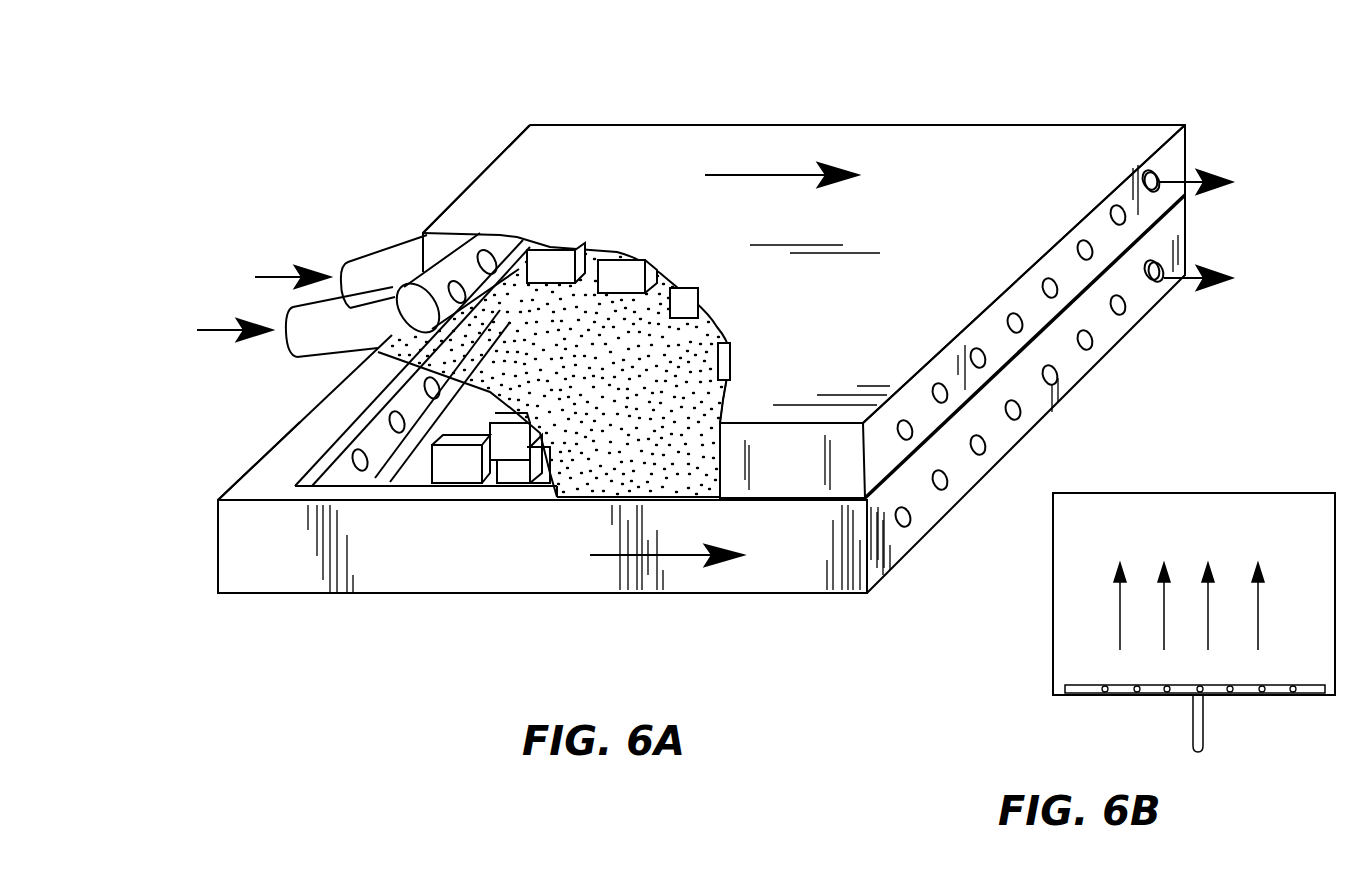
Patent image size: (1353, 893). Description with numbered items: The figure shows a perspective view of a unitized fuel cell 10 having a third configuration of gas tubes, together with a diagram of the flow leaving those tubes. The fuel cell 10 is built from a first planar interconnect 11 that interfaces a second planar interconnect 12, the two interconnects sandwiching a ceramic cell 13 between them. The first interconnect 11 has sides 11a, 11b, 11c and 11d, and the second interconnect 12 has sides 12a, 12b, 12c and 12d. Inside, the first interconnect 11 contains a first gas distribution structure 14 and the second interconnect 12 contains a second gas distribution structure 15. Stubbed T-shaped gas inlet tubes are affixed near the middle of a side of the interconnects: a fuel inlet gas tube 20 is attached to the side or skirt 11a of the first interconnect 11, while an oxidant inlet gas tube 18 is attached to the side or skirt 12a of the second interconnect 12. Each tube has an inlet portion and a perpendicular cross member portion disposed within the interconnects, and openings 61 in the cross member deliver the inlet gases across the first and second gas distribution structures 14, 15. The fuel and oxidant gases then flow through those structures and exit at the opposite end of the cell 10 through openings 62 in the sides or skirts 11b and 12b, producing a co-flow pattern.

In FIG. 6A, the fuel cell 10 is at (1128, 62).
In FIG. 6A, the first planar interconnect 11 is at (234, 542).
In FIG. 6A, the side of first interconnect 11a is at (226, 492).
In FIG. 6A, the side of first interconnect 11b is at (1103, 333).
In FIG. 6A, the side of first interconnect 11c is at (742, 583).
In FIG. 6A, the side of first interconnect 11d is at (988, 120).
In FIG. 6A, the second planar interconnect 12 is at (619, 128).
In FIG. 6A, the side of second interconnect 12a is at (492, 176).
In FIG. 6A, the side of second interconnect 12b is at (1025, 285).
In FIG. 6A, the side of second interconnect 12c is at (807, 483).
In FIG. 6A, the side of second interconnect 12d is at (838, 124).
In FIG. 6A, the ceramic cell 13 is at (583, 483).
In FIG. 6A, the first gas distribution structure 14 is at (410, 470).
In FIG. 6A, the second gas distribution structure 15 is at (473, 233).
In FIG. 6A, the oxidant inlet gas tube 18 is at (382, 262).
In FIG. 6B, the oxidant inlet gas tube 18 is at (1204, 725).
In FIG. 6A, the fuel inlet gas tube 20 is at (315, 355).
In FIG. 6A, the openings 61 is at (360, 445).
In FIG. 6A, the openings 62 is at (1158, 182).